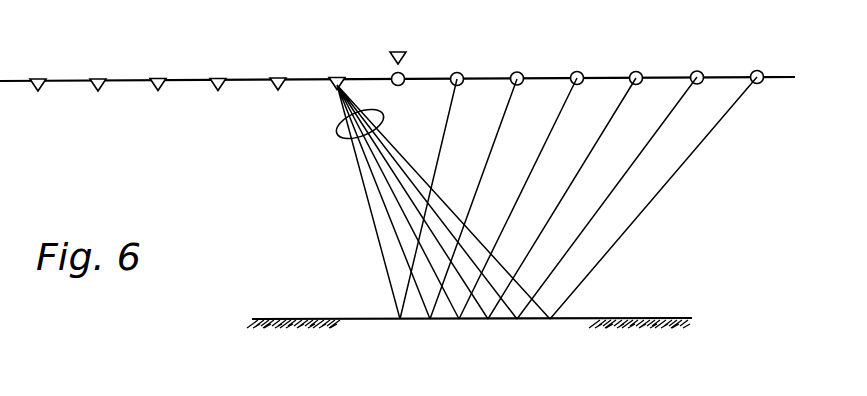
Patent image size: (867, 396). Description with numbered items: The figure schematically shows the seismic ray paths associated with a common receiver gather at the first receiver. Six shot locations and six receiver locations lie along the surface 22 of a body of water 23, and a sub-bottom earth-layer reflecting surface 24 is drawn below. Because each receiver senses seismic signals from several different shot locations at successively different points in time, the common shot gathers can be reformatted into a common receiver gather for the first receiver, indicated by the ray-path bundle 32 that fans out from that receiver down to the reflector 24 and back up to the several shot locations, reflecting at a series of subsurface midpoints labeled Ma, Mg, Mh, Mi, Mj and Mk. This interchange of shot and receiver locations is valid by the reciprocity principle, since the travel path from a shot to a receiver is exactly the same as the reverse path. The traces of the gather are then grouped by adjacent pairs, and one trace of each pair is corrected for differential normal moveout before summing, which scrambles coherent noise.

The surface 22 is at (190, 82).
The body of water 23 is at (308, 210).
The sub-bottom earth-layer reflecting surface 24 is at (292, 318).
The ray-path bundle 32 is at (377, 109).